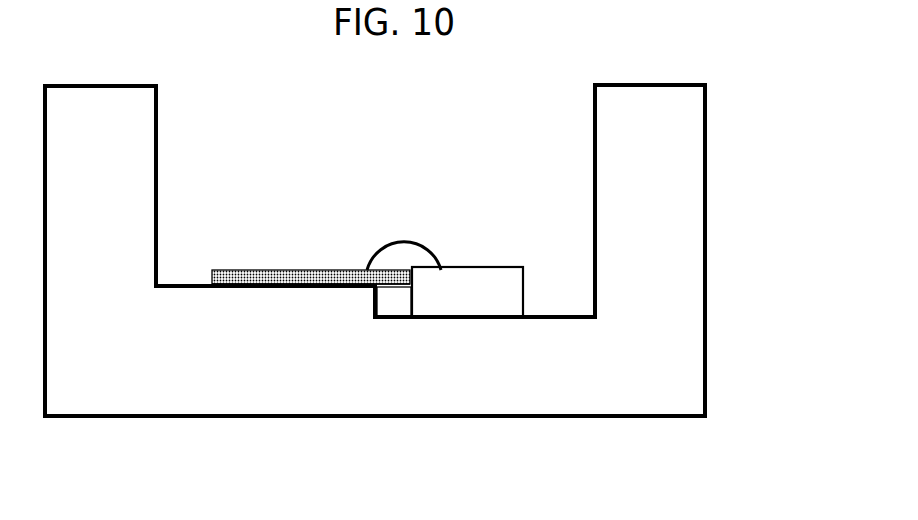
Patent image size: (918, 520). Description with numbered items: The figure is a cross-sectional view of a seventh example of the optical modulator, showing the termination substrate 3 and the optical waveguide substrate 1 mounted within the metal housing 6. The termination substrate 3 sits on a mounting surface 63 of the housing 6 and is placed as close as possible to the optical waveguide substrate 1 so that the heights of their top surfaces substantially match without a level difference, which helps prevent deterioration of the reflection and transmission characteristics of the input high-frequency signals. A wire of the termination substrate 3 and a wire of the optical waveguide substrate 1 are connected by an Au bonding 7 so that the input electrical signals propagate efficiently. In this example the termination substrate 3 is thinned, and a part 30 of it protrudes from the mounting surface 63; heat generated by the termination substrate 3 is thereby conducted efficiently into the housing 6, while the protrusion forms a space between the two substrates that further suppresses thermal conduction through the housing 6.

The optical waveguide substrate 1 is at (503, 286).
The termination substrate 3 is at (270, 270).
The housing 6 is at (663, 326).
The Au bonding 7 is at (415, 240).
The part of the termination substrate 30 is at (390, 292).
The mounting surface 63 is at (363, 292).